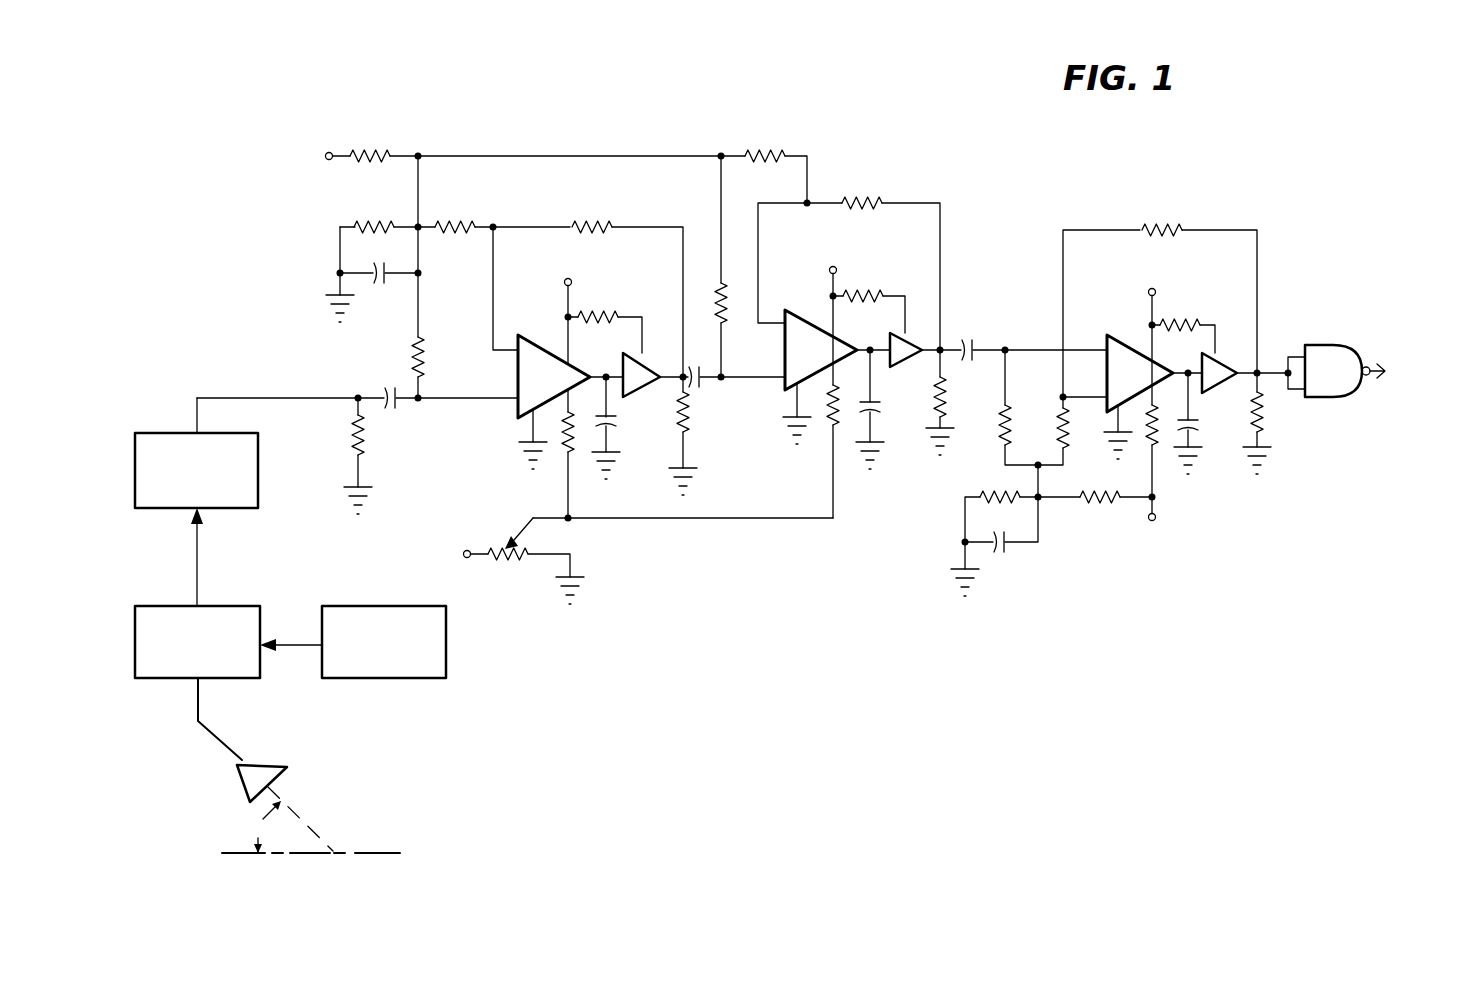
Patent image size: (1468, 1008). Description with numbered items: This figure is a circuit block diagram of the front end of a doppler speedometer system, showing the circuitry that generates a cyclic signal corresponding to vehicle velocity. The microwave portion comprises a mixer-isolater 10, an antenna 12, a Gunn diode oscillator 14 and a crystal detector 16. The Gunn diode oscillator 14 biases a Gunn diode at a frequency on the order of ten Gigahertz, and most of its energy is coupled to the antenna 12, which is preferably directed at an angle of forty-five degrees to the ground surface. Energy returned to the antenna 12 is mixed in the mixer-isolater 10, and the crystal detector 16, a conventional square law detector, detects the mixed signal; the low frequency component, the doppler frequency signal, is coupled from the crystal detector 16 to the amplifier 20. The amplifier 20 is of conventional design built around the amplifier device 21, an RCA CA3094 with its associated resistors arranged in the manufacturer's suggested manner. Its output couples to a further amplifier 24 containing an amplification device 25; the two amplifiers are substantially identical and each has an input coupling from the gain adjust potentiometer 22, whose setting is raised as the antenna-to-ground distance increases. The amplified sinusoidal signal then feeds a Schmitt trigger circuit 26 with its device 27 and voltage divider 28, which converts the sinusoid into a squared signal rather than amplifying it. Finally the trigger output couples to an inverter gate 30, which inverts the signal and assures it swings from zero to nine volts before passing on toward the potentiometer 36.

The mixer-isolater 10 is at (235, 606).
The antenna 12 is at (258, 762).
The Gunn diode oscillator 14 is at (392, 606).
The crystal detector 16 is at (259, 487).
The amplifier 20 is at (515, 327).
The amplifier device 21 is at (547, 391).
The gain adjust potentiometer 22 is at (489, 572).
The further amplifier 24 is at (914, 325).
The amplification device 25 is at (814, 364).
The Schmitt trigger circuit 26 is at (1147, 377).
The device 27 is at (1137, 387).
The voltage divider 28 is at (1046, 558).
The inverter gate 30 is at (1332, 384).
The potentiometer (FIG. 2) 36 is at (1405, 388).